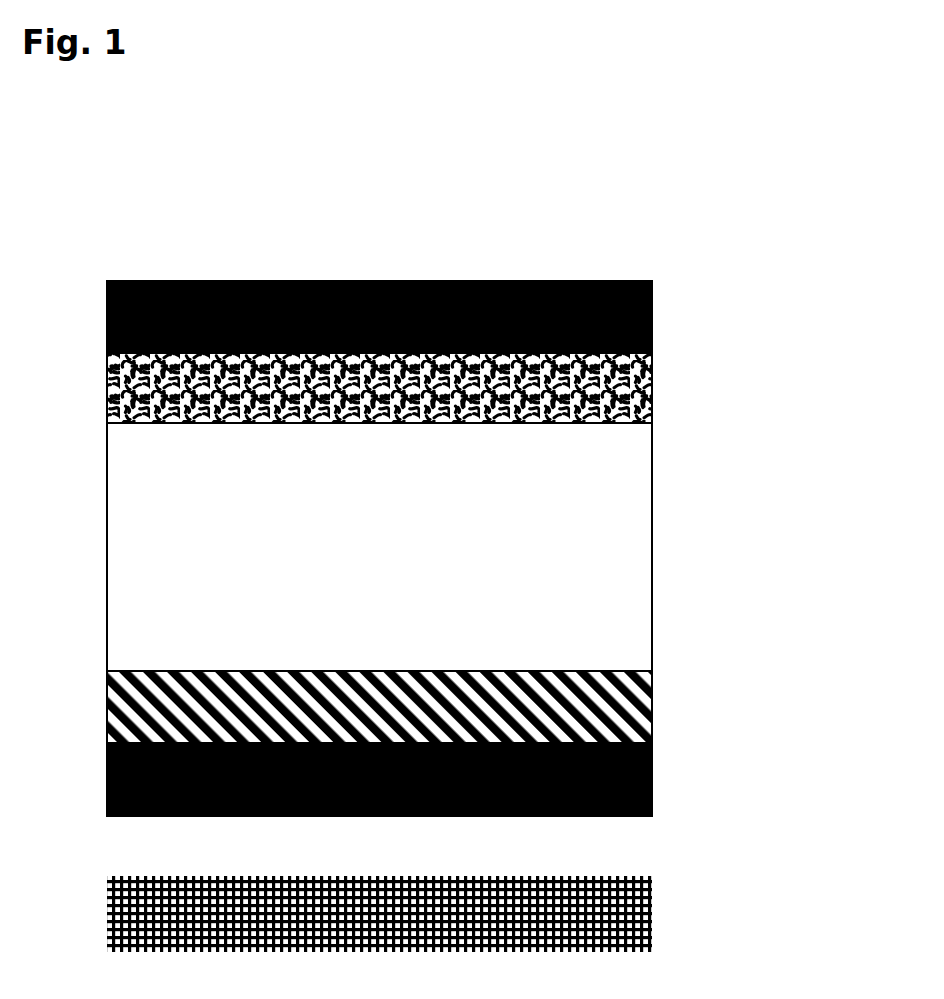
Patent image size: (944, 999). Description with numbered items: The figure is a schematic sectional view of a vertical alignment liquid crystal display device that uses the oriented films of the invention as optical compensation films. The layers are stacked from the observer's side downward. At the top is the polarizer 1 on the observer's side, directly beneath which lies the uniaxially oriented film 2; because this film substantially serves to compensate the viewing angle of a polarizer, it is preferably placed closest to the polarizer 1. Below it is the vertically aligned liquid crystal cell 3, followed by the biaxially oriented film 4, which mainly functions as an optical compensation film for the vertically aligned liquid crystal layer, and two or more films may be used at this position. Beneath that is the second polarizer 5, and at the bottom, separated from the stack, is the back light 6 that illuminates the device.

The polarizer 1 is at (568, 282).
The uniaxially oriented film 2 is at (652, 389).
The vertically aligned liquid crystal cell 3 is at (533, 527).
The biaxially oriented film 4 is at (590, 726).
The polarizer 5 is at (652, 804).
The back light 6 is at (630, 908).